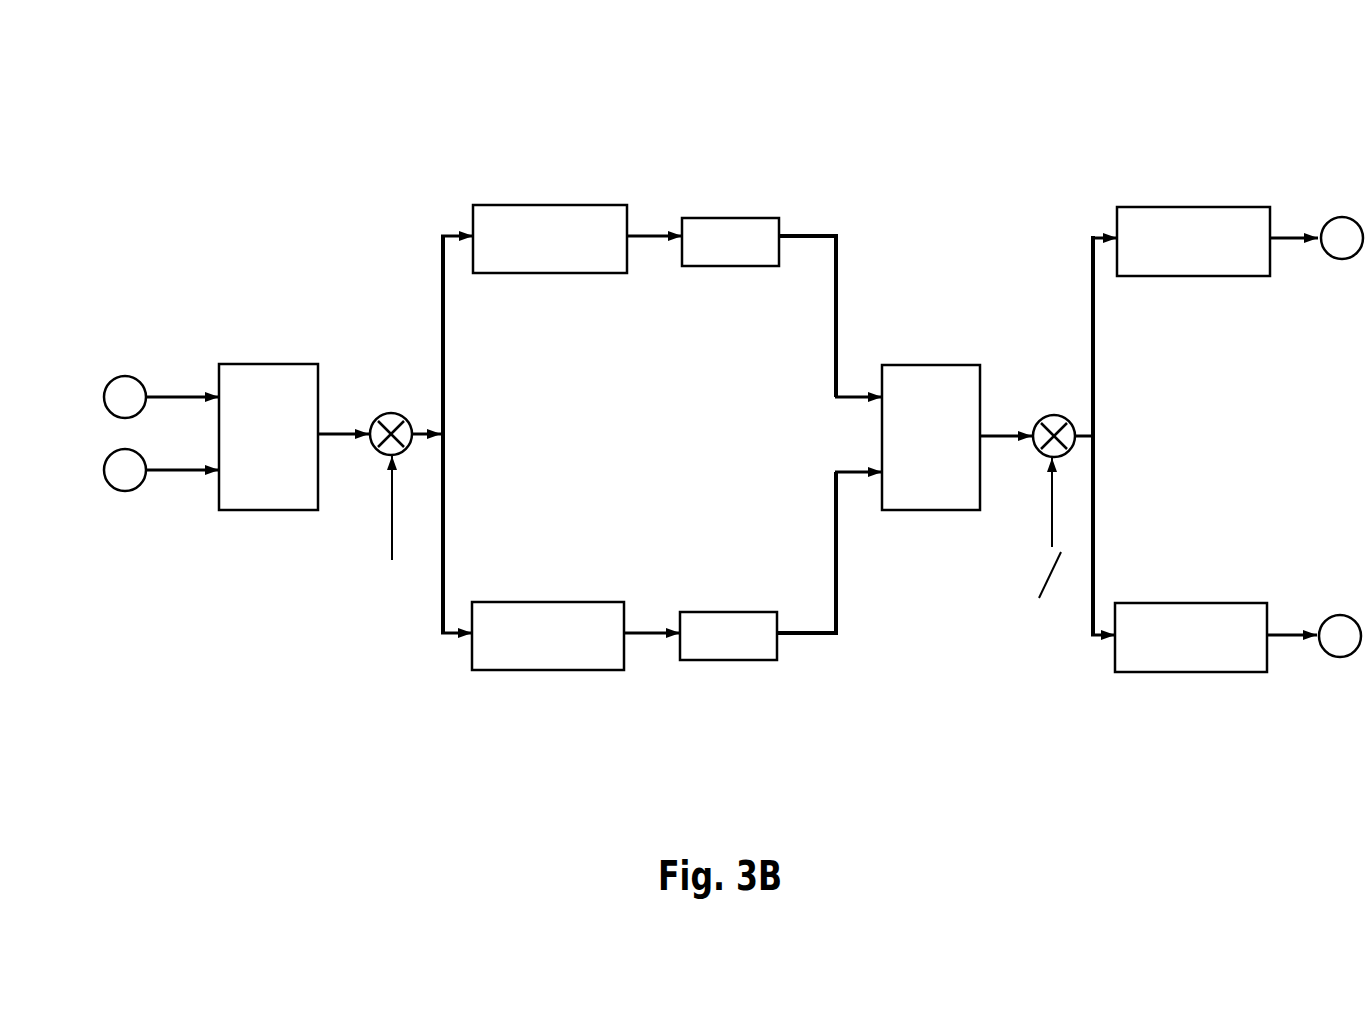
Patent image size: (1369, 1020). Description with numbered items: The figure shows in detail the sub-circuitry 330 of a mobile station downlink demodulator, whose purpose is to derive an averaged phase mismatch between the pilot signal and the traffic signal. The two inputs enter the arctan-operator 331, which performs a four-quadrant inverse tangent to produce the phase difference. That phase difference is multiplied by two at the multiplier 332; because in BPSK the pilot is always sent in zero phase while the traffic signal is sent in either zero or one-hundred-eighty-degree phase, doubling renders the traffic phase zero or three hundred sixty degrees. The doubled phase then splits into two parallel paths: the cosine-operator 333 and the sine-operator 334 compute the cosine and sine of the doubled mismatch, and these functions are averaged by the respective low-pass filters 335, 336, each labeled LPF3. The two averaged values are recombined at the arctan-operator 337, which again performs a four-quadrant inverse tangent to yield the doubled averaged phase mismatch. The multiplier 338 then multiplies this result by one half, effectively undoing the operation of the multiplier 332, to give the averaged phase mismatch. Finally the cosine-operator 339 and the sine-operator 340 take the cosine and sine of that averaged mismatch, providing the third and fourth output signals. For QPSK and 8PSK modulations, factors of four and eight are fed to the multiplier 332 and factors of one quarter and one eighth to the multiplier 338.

The sub-circuitry 330 is at (358, 145).
The arctan-operator 331 is at (256, 363).
The multiplier 332 is at (385, 412).
The cosine-operator 333 is at (531, 205).
The sine-operator 334 is at (543, 671).
The low-pass filter 335 is at (717, 218).
The low-pass filter 336 is at (720, 661).
The arctan-operator 337 is at (921, 364).
The multiplier 338 is at (1043, 412).
The cosine-operator 339 is at (1165, 207).
The sine-operator 340 is at (1168, 673).